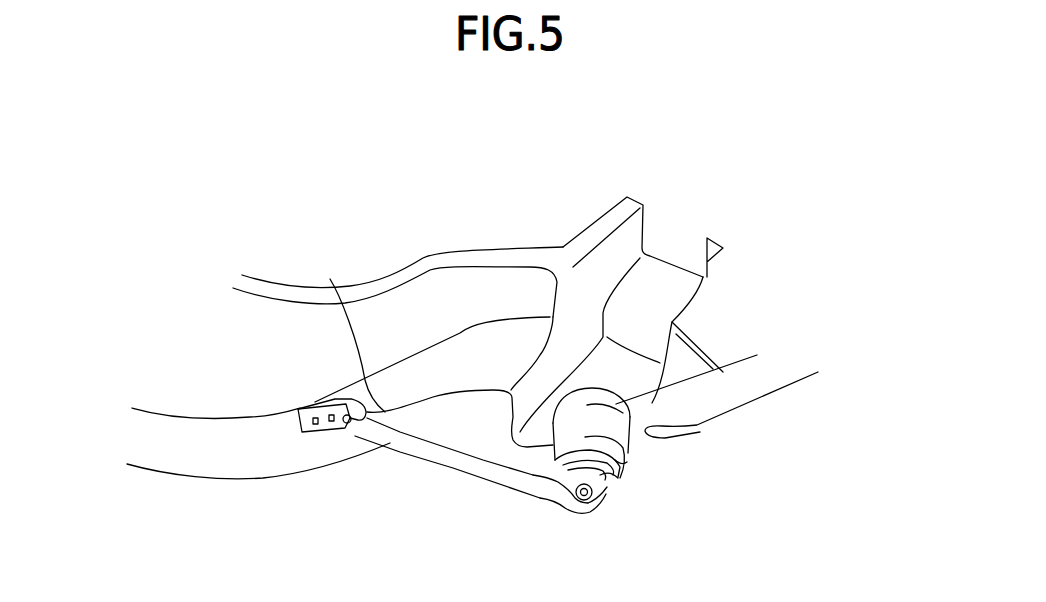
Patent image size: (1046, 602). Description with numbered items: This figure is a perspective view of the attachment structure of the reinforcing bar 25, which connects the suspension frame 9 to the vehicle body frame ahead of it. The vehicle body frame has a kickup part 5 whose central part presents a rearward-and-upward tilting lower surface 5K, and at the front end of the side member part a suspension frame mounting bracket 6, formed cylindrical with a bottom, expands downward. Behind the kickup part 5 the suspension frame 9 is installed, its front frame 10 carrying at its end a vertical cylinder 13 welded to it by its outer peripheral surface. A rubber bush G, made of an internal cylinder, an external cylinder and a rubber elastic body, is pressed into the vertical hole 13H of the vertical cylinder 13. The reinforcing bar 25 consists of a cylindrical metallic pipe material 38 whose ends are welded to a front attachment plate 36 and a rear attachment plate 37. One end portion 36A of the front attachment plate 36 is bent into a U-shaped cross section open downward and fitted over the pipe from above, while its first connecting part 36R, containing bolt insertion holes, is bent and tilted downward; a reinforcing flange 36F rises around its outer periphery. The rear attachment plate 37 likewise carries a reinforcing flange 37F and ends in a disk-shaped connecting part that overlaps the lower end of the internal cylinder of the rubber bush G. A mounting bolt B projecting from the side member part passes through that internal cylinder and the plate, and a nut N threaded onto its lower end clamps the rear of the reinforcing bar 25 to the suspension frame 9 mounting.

The kickup part 5 is at (382, 312).
The lower surface of the kickup part 5K is at (350, 329).
The suspension frame mounting bracket 6 is at (542, 370).
The front attachment plate 36 is at (326, 428).
The reinforcing flange 36F is at (333, 400).
The first connecting part 36R is at (300, 432).
The one end portion of the front attachment plate 36A is at (368, 405).
The reinforcing bar 25 is at (518, 496).
The pipe material 38 is at (462, 470).
The rear attachment plate 37 is at (618, 525).
The reinforcing flange 37F is at (610, 492).
The nut N is at (576, 500).
The mounting bolt B is at (593, 502).
The vertical cylinder 13 is at (607, 479).
The vertical hole 13H is at (625, 473).
The rubber bush G is at (624, 468).
The front frame 10 is at (742, 414).
The suspension frame 9 is at (758, 380).